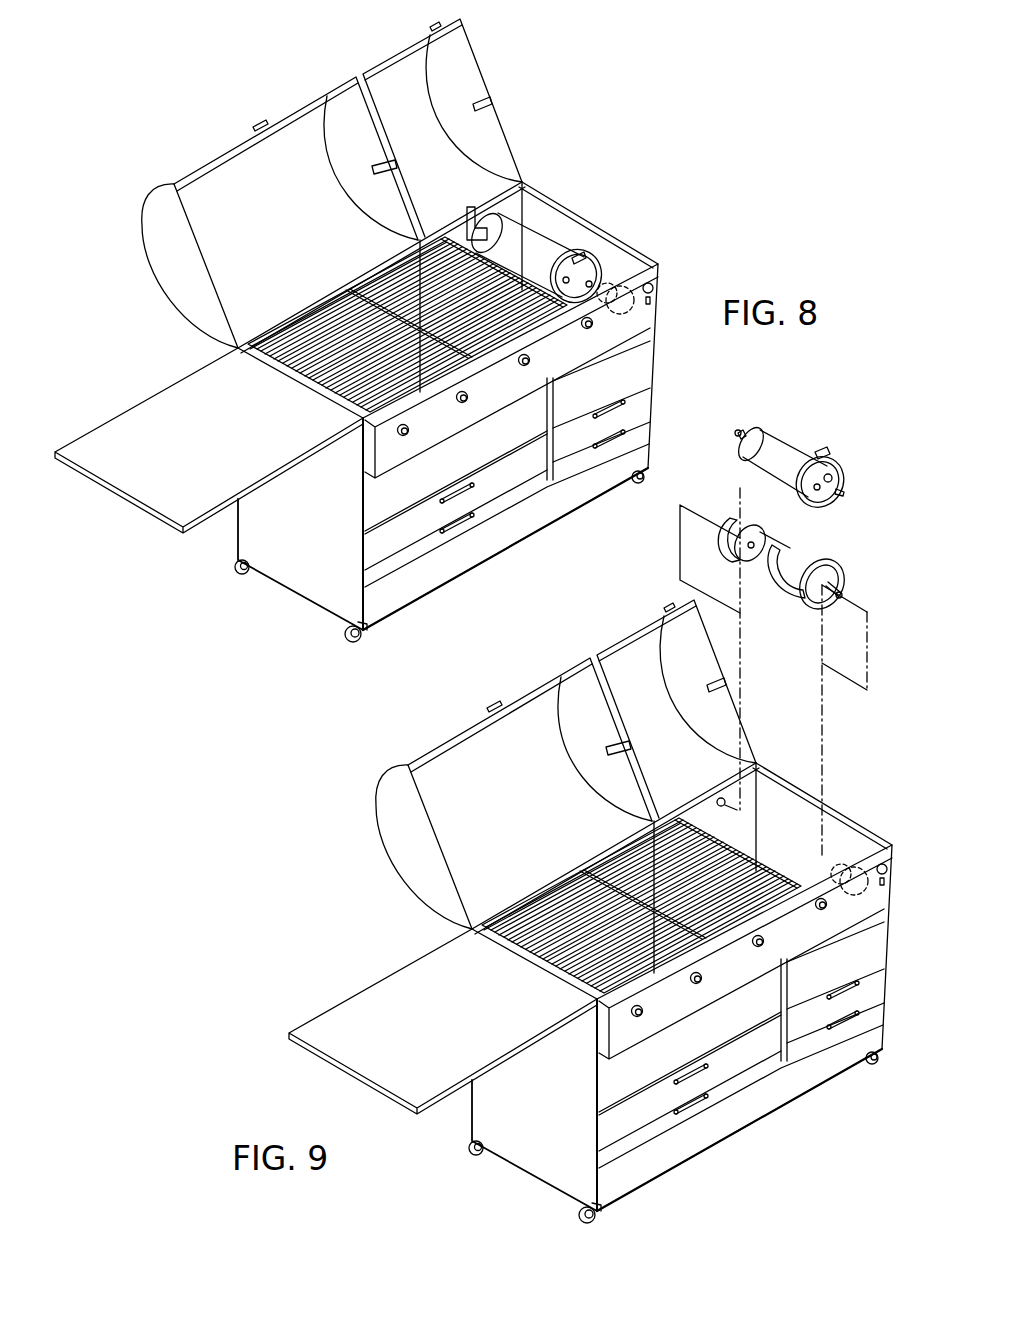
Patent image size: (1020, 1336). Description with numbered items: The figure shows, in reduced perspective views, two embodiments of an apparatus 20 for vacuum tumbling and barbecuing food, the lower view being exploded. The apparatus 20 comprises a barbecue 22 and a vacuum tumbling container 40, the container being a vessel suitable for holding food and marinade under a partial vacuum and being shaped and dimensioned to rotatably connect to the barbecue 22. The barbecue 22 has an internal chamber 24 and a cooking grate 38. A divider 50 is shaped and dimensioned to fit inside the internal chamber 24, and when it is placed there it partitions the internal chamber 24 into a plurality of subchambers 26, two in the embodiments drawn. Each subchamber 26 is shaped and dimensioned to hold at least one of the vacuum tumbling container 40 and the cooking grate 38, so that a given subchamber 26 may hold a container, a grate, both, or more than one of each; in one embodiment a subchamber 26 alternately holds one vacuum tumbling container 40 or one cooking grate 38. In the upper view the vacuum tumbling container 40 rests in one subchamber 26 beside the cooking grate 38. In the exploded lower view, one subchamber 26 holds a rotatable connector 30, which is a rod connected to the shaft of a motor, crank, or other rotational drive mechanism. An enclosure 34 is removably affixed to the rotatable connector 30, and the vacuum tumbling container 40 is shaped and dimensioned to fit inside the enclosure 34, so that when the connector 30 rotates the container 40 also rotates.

In FIG. 8, the apparatus 20 is at (636, 55).
In FIG. 9, the apparatus 20 is at (575, 911).
In FIG. 8, the barbecue 22 is at (634, 141).
In FIG. 8, the internal chamber 24 is at (650, 213).
In FIG. 8, the subchamber 26 is at (572, 223).
In FIG. 9, the subchamber 26 is at (599, 764).
In FIG. 9, the rotatable connector 30 is at (857, 584).
In FIG. 9, the enclosure 34 is at (797, 621).
In FIG. 8, the cooking grate 38 is at (288, 377).
In FIG. 8, the vacuum tumbling container 40 is at (513, 232).
In FIG. 9, the vacuum tumbling container 40 is at (777, 462).
In FIG. 8, the divider 50 is at (417, 240).
In FIG. 9, the divider 50 is at (702, 876).